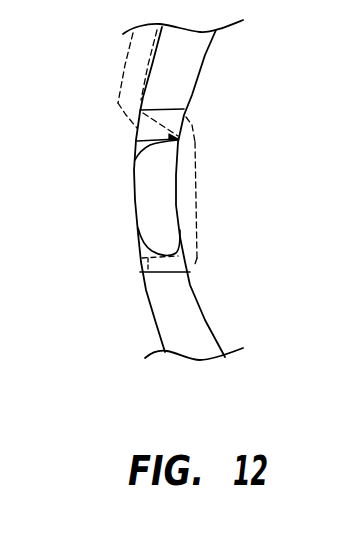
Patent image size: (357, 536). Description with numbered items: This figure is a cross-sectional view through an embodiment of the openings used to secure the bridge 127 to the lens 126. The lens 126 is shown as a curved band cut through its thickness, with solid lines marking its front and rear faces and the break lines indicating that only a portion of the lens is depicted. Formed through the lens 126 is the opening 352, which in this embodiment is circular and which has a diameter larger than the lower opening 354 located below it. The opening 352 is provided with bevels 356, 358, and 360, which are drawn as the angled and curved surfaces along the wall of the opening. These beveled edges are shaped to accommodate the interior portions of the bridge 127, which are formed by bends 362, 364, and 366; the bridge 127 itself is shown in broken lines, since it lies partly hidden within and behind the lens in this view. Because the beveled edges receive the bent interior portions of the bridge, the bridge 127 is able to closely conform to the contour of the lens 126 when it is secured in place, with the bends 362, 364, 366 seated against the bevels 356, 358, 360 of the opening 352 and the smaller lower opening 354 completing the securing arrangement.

The lens 126 is at (206, 53).
The bridge 127 is at (195, 165).
The opening 352 is at (185, 115).
The lower opening 354 is at (141, 266).
The bevel 356 is at (142, 108).
The bevel 358 is at (135, 160).
The bevel 360 is at (136, 217).
The bend 362 is at (118, 103).
The bend 364 is at (190, 128).
The bend 366 is at (195, 264).